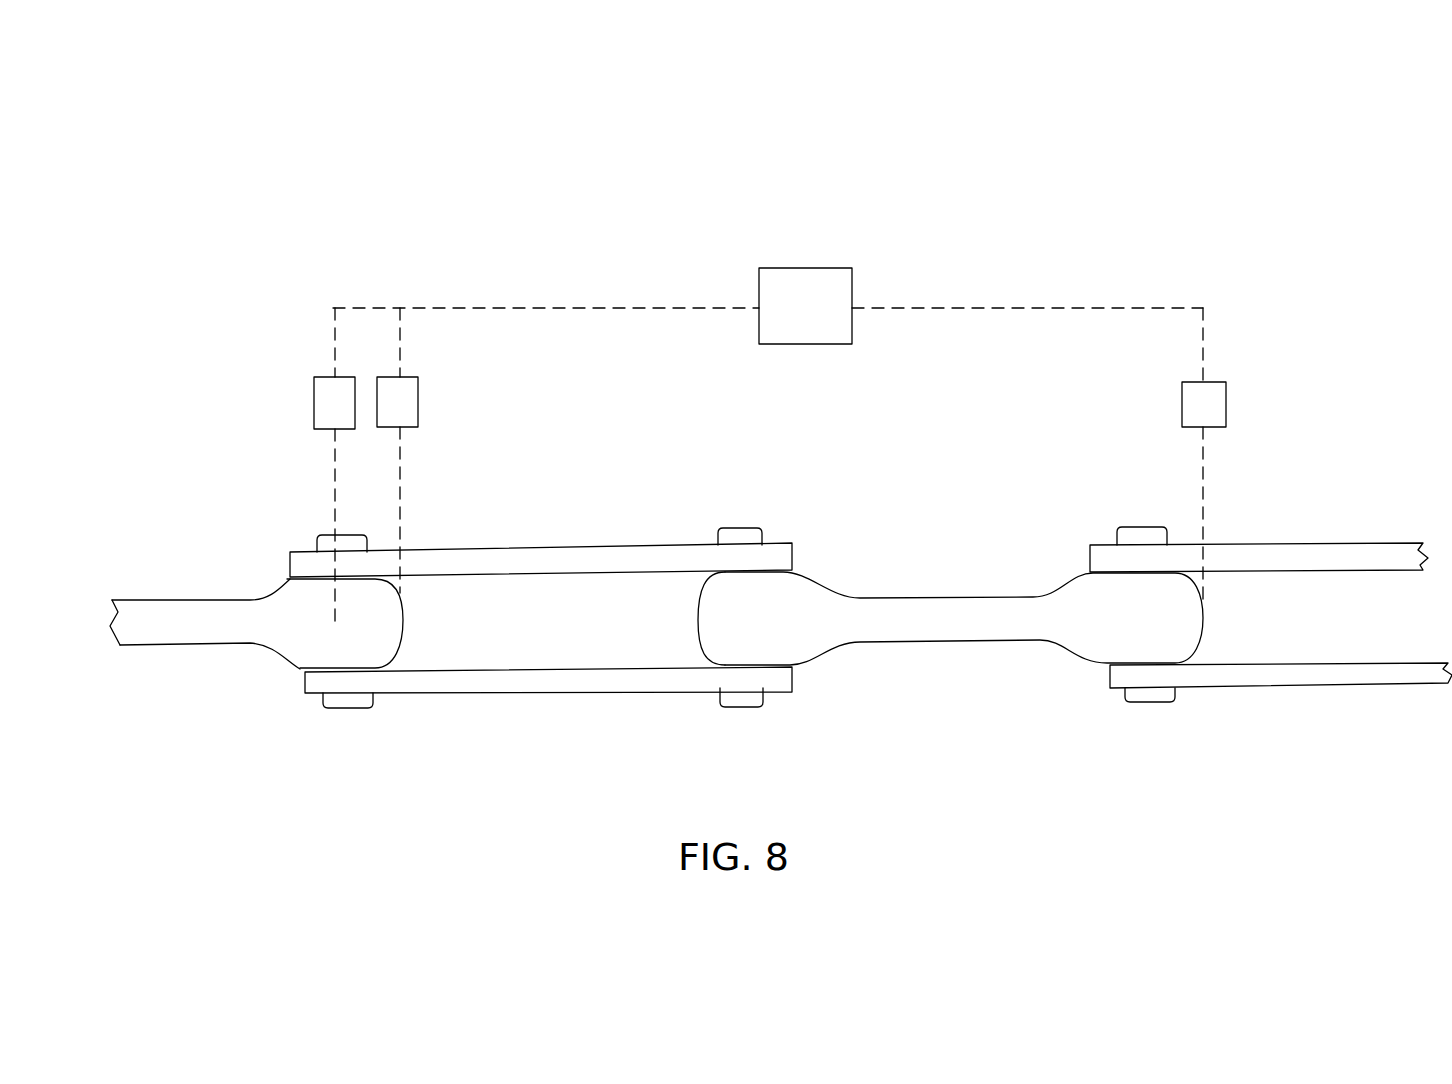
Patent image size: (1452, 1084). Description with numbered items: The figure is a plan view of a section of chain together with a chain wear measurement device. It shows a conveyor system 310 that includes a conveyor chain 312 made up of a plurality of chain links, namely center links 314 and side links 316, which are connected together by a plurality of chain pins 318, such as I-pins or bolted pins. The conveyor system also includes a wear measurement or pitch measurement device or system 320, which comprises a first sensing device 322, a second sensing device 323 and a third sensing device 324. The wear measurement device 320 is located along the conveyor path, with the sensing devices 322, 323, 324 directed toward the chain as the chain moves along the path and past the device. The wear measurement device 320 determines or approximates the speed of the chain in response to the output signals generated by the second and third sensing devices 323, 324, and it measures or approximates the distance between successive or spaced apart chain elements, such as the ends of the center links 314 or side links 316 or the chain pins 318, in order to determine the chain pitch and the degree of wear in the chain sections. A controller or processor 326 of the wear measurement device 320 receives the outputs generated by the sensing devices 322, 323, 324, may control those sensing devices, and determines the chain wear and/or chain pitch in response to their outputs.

The conveyor system 310 is at (515, 204).
The conveyor chain 312 is at (914, 717).
The center link 314 is at (208, 632).
The side link 316 is at (548, 545).
The chain pin 318 is at (347, 700).
The wear measurement device 320 is at (965, 253).
The first sensing device 322 is at (1220, 400).
The second sensing device 323 is at (410, 398).
The third sensing device 324 is at (325, 398).
The controller 326 is at (803, 278).